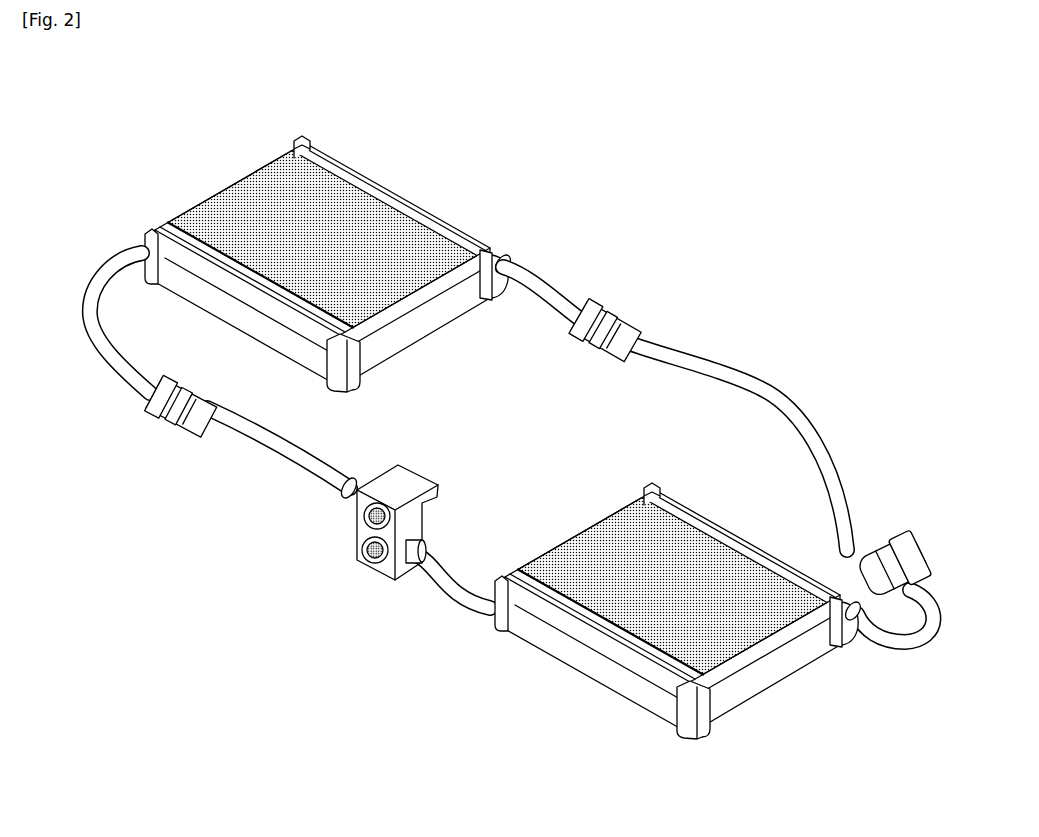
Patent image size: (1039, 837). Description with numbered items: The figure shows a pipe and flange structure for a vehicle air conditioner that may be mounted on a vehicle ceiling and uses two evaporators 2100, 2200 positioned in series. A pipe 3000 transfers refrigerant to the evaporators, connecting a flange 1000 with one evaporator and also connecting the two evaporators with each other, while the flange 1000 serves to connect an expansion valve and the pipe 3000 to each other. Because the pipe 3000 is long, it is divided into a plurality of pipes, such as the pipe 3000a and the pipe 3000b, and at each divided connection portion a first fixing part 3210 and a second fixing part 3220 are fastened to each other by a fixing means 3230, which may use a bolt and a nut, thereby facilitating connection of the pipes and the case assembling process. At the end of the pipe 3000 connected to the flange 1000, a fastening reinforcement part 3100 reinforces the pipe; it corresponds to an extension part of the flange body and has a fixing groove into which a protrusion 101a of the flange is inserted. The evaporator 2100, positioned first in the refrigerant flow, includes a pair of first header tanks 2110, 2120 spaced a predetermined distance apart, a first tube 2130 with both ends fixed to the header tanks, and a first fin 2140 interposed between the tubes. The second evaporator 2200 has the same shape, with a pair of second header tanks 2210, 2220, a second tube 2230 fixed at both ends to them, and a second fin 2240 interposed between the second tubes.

The flange 1000 is at (362, 586).
The protrusion 101a is at (342, 497).
The fastening reinforcement part 3100 is at (343, 530).
The evaporator 2100 is at (551, 696).
The first header tank 2110 is at (597, 687).
The first header tank 2120 is at (607, 491).
The first tube 2130 is at (763, 596).
The first fin 2140 is at (800, 665).
The evaporator 2200 is at (182, 118).
The second header tank 2210 is at (158, 226).
The second header tank 2220 is at (304, 137).
The second tube 2230 is at (375, 174).
The second fin 2240 is at (454, 227).
The pipe 3000 is at (447, 615).
The pipe 3000a is at (282, 448).
The pipe 3000b is at (118, 366).
The first fixing part 3210 is at (160, 426).
The second fixing part 3220 is at (152, 405).
The fixing means 3230 is at (188, 430).